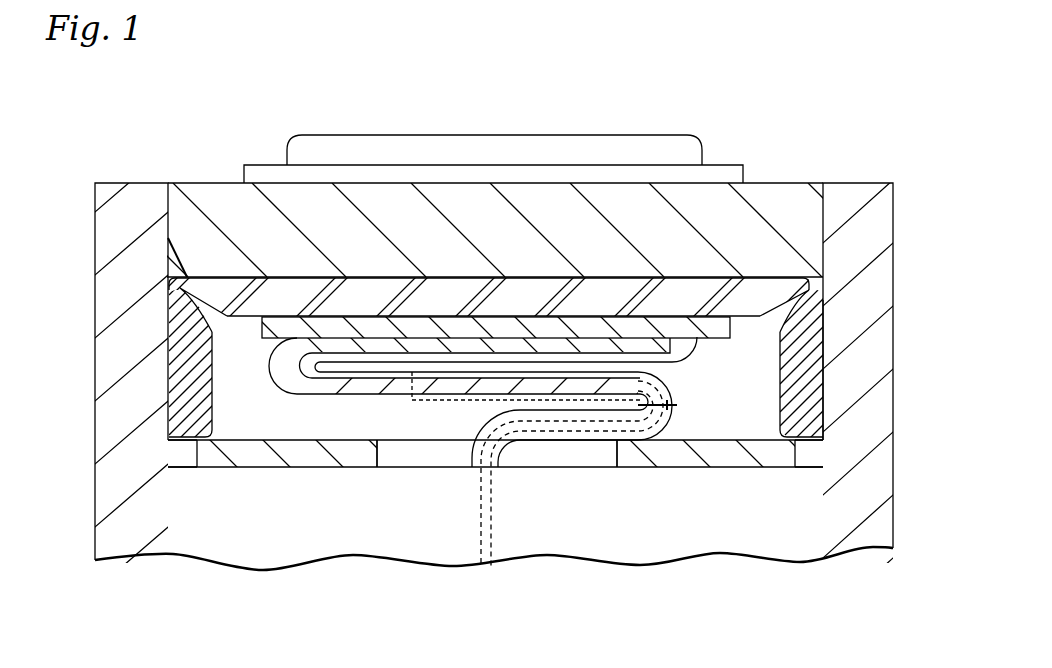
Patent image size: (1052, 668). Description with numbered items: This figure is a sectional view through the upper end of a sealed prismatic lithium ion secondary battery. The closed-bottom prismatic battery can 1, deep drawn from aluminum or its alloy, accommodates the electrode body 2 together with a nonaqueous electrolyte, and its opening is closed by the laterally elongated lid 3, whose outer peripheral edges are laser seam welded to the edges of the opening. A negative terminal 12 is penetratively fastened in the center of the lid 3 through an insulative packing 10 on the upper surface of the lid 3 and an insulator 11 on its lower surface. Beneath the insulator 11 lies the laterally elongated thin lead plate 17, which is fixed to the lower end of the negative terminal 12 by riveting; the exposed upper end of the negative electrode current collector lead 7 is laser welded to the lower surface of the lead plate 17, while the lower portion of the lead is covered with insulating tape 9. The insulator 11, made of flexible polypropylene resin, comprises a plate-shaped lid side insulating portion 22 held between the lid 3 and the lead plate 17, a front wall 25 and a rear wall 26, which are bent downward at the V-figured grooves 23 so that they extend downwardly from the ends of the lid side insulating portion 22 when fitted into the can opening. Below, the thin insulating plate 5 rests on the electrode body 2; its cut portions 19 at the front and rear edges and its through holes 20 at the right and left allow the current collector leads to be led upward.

The battery can 1 is at (95, 265).
The electrode body 2 is at (368, 537).
The lid 3 is at (778, 183).
The insulating plate 5 is at (320, 480).
The negative electrode current collector lead 7 is at (350, 394).
The insulating tape 9 is at (670, 380).
The insulative packing 10 is at (725, 165).
The insulator 11 is at (838, 337).
The negative terminal 12 is at (478, 135).
The lead plate 17 is at (273, 343).
The cut portion 19 is at (187, 455).
The through hole 20 is at (617, 453).
The lid side insulating portion 22 is at (453, 284).
The V-figured groove 23 is at (220, 318).
The front wall 25 is at (182, 396).
The rear wall 26 is at (808, 396).